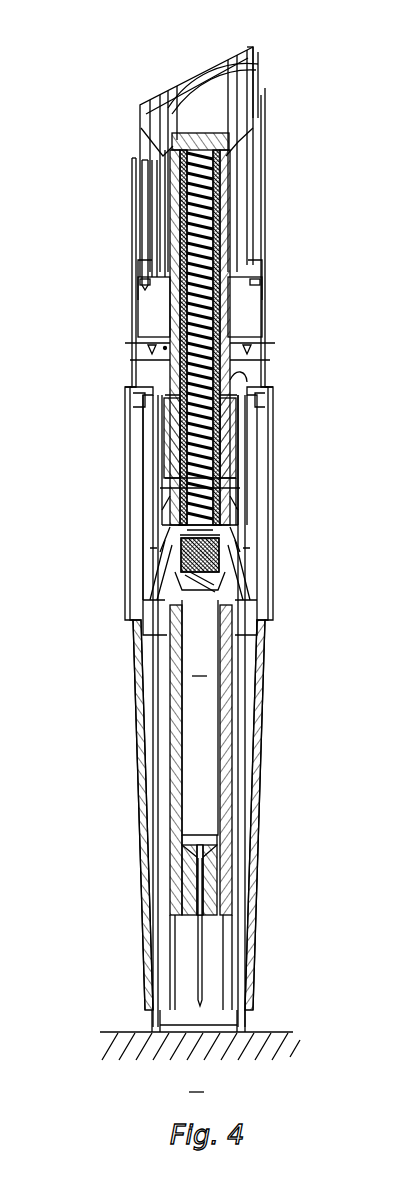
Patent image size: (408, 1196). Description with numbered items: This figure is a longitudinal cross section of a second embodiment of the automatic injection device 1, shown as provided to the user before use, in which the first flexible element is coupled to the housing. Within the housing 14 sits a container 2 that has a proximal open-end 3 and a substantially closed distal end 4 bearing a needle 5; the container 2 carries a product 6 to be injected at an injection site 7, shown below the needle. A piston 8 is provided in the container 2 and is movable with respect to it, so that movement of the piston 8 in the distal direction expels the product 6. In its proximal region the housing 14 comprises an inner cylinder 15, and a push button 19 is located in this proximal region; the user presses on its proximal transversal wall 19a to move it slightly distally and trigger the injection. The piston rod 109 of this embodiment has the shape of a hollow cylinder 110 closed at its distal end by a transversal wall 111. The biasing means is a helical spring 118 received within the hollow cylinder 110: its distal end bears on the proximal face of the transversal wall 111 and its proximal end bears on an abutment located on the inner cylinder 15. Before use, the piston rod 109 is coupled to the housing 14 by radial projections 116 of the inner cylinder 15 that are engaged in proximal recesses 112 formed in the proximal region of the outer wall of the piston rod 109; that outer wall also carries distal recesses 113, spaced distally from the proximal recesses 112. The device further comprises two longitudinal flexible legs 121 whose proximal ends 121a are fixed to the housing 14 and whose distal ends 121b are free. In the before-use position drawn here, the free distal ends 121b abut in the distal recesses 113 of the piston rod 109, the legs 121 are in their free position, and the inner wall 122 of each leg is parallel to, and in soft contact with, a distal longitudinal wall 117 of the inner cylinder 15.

The device 1 is at (283, 74).
The container 2 is at (240, 748).
The proximal open-end 3 is at (168, 490).
The distal end 4 is at (190, 920).
The needle 5 is at (218, 965).
The product 6 is at (200, 717).
The injection site 7 is at (200, 1062).
The piston 8 is at (258, 580).
The housing 14 is at (122, 420).
The inner cylinder 15 is at (238, 355).
The push button 19 is at (166, 60).
The proximal transversal wall 19a is at (200, 68).
The piston rod 109 is at (165, 348).
The hollow cylinder 110 is at (246, 419).
The transversal wall 111 is at (150, 560).
The proximal recesses 112 is at (245, 177).
The distal recesses 113 is at (240, 488).
The radial projections 116 is at (133, 173).
The distal longitudinal wall 117 is at (168, 463).
The helical spring 118 is at (136, 266).
The longitudinal flexible legs 121 is at (243, 455).
The proximal ends 121a is at (244, 387).
The distal ends 121b is at (172, 483).
The inner wall 122 is at (165, 441).